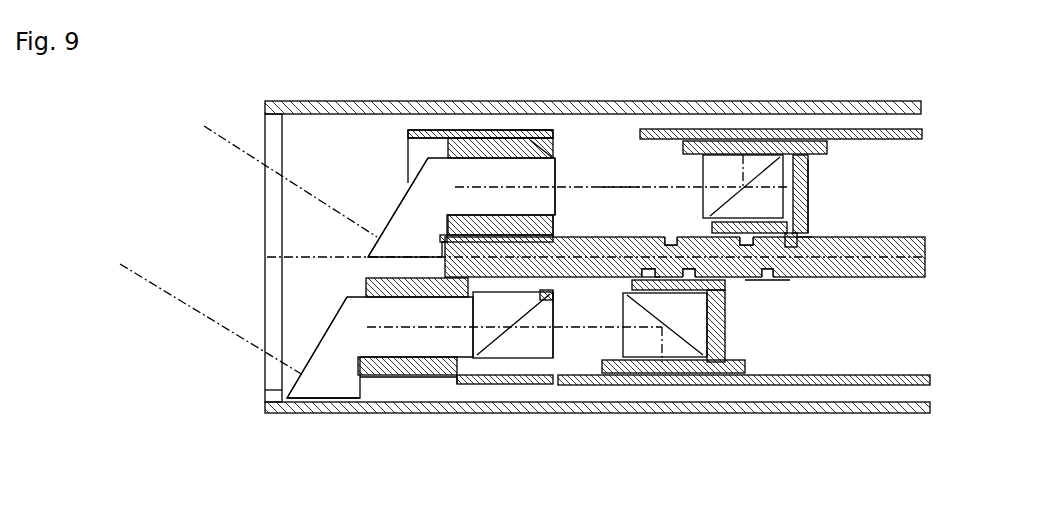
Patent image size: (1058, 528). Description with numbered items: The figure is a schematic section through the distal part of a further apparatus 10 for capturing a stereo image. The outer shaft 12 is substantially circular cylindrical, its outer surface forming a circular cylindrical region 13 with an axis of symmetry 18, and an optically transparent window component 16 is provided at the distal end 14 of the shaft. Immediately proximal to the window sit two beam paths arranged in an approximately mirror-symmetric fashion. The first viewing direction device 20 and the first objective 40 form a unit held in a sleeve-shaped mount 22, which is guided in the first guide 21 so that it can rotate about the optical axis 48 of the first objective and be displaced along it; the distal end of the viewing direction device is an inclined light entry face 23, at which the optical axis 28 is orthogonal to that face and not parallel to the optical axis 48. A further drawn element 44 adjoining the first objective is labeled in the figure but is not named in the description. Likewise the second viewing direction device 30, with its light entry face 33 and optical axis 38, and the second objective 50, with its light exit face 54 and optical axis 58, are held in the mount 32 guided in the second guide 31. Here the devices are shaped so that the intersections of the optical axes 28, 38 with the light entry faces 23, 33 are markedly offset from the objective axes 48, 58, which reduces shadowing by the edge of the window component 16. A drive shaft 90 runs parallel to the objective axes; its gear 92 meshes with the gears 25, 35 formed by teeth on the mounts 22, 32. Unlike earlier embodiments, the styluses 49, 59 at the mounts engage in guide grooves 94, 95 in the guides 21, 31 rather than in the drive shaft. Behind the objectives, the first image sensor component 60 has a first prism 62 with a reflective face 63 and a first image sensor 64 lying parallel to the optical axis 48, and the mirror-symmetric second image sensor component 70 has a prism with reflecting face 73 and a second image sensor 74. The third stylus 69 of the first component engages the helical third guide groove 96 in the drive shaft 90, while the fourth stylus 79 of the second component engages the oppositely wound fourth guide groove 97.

The apparatus 10 is at (258, 83).
The distal end of the shaft 14 is at (526, 256).
The outer shaft 12 is at (932, 425).
The circular cylindrical region 13 is at (890, 415).
The optically transparent window component 16 is at (268, 363).
The axis of symmetry 18 is at (262, 262).
The first viewing direction device 20 is at (268, 393).
The first guide 21 is at (495, 383).
The mount 22 is at (316, 395).
The light entry face 23 is at (313, 350).
The gear 25 is at (367, 377).
The optical axis of the first viewing direction device 28 is at (222, 305).
The second viewing direction device 30 is at (418, 178).
The second guide 31 is at (422, 130).
The mount 32 is at (447, 150).
The light entry face 33 is at (377, 240).
The gear 35 is at (468, 140).
The optical axis of the second viewing direction device 38 is at (213, 130).
The first objective 40 is at (432, 376).
The lower body 44 is at (480, 352).
The optical axis of the first objective 48 is at (577, 322).
The stylus 49 is at (452, 376).
The second objective 50 is at (490, 135).
The light exit face 54 is at (557, 168).
The optical axis of the second objective 58 is at (627, 187).
The stylus 59 is at (533, 132).
The first image sensor component 60 is at (727, 323).
The first prism 62 is at (725, 348).
The reflective face 63 is at (673, 335).
The first image sensor 64 is at (690, 320).
The third stylus 69 is at (652, 272).
The second image sensor component 70 is at (808, 192).
The reflecting face 73 is at (758, 178).
The second image sensor 74 is at (747, 140).
The fourth stylus 79 is at (792, 240).
The drive shaft 90 is at (875, 277).
The gear 92 is at (552, 218).
The first guide groove 94 is at (548, 300).
The second guide groove 95 is at (538, 148).
The third guide groove 96 is at (745, 280).
The fourth guide groove 97 is at (813, 240).